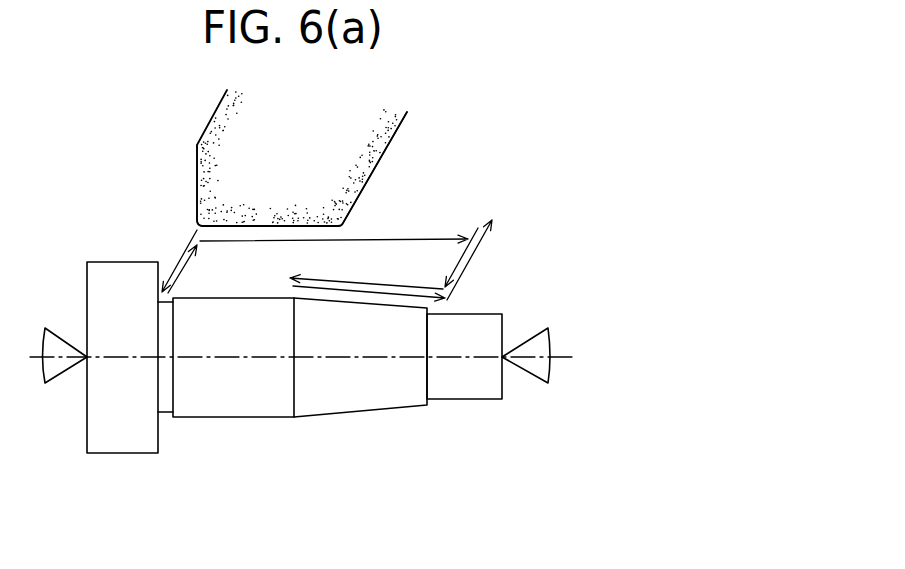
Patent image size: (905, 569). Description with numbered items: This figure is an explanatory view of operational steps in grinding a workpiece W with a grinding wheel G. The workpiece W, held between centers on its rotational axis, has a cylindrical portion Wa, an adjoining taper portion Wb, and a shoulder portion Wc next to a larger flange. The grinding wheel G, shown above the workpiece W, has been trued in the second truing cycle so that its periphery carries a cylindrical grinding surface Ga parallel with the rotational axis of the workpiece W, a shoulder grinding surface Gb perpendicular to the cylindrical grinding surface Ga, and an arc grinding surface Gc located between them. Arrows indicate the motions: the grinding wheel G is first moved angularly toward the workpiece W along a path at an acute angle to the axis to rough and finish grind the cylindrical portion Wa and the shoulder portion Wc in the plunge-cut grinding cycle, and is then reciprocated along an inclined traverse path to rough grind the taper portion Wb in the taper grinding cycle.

The grinding wheel G is at (390, 131).
The cylindrical grinding surface Ga is at (330, 228).
The shoulder grinding surface Gb is at (197, 158).
The arc grinding surface Gc is at (197, 223).
The workpiece W is at (103, 268).
The cylindrical portion Wa is at (226, 437).
The taper portion Wb is at (376, 429).
The shoulder portion Wc is at (162, 448).